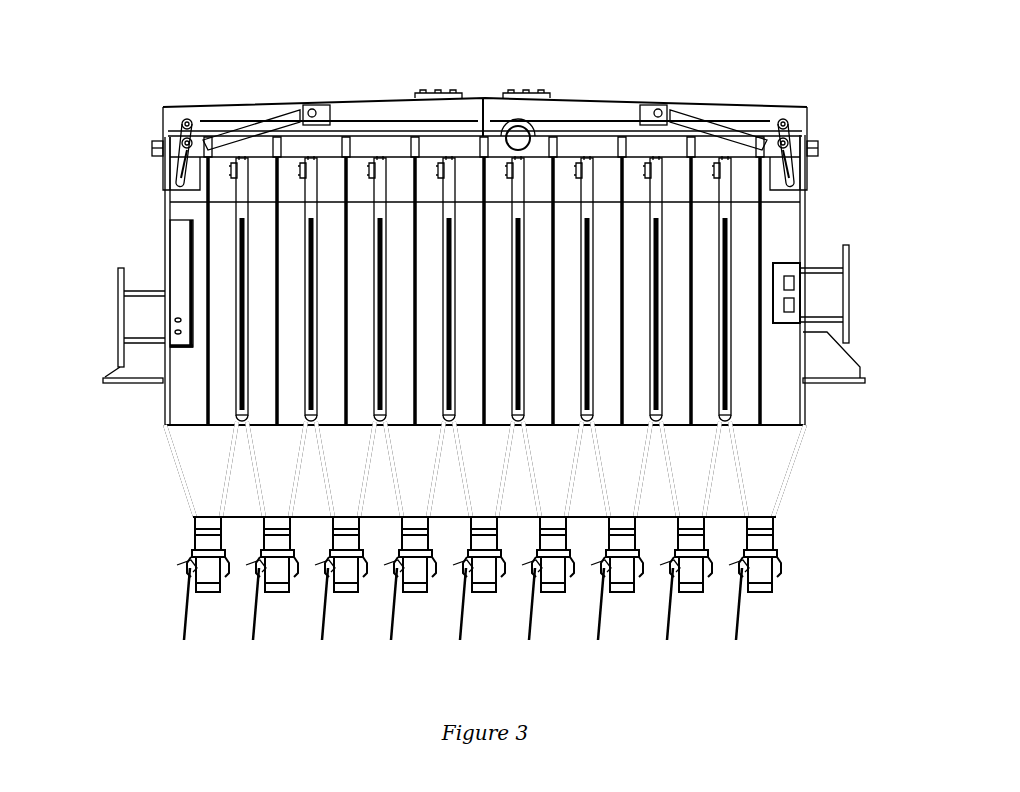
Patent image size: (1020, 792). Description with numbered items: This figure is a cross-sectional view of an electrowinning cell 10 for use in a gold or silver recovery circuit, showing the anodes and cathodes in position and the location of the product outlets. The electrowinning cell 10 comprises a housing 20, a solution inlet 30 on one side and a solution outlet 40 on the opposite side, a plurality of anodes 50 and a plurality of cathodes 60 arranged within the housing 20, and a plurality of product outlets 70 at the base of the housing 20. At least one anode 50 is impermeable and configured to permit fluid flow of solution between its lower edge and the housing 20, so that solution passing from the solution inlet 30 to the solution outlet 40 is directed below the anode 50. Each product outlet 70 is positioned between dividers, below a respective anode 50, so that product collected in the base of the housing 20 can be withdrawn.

The electrowinning cell 10 is at (135, 84).
The housing 20 is at (803, 215).
The solution inlet 30 is at (118, 296).
The solution outlet 40 is at (852, 272).
The anodes 50 is at (757, 230).
The cathodes 60 is at (440, 237).
The product outlets 70 is at (200, 537).